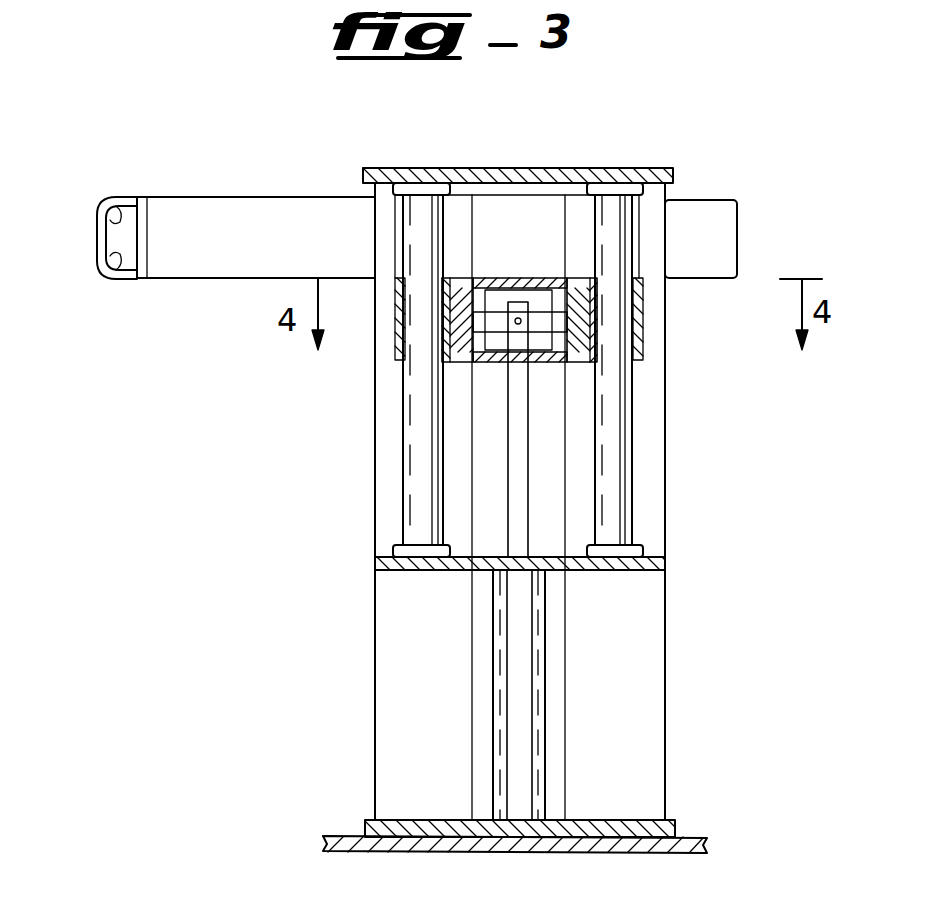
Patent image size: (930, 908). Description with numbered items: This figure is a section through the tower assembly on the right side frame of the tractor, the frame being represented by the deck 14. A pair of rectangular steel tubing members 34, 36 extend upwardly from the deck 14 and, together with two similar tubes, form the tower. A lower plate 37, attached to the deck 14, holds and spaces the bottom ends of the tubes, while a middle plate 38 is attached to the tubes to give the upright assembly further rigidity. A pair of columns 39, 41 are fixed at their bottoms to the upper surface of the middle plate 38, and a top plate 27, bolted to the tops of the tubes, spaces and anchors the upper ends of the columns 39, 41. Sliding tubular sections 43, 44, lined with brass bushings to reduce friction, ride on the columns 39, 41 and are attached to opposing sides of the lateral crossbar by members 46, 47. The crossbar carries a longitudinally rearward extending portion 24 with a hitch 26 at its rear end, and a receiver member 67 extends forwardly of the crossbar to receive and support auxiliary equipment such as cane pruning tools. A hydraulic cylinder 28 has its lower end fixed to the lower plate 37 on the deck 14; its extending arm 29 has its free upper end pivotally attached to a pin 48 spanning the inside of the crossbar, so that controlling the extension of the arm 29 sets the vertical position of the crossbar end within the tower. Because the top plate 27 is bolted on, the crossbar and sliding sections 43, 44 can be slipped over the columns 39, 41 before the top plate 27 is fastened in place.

The deck 14 is at (707, 845).
The longitudinally rearward extending portion 24 is at (212, 197).
The hitch 26 is at (106, 196).
The top plate 27 is at (585, 168).
The hydraulic cylinder 28 is at (525, 680).
The extending arm 29 is at (517, 528).
The steel tubing member 34 is at (375, 490).
The steel tubing member 36 is at (667, 508).
The lower plate 37 is at (680, 822).
The middle plate 38 is at (655, 585).
The column 39 is at (417, 454).
The column 41 is at (623, 403).
The sliding tubular section 43 is at (392, 307).
The sliding tubular section 44 is at (642, 322).
The member 46 is at (462, 278).
The member 47 is at (573, 278).
The pin 48 is at (490, 321).
The receiver member 67 is at (737, 230).